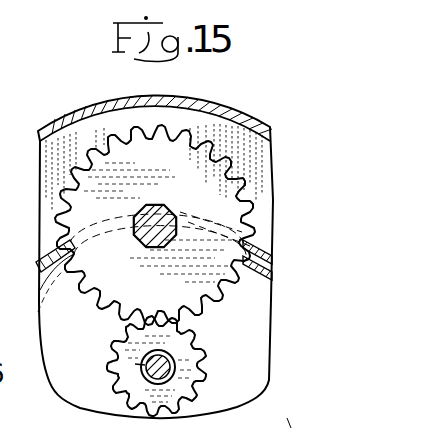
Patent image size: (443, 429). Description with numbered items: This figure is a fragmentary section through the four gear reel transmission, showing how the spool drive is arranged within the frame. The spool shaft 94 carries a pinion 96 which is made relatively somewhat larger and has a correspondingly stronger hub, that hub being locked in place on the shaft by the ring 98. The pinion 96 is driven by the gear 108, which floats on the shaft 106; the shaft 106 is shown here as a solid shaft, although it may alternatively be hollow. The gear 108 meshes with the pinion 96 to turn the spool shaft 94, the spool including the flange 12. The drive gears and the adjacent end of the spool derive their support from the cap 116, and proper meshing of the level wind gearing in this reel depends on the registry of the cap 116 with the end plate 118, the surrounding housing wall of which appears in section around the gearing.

The flange 12 is at (75, 312).
The spool shaft 94 is at (142, 368).
The pinion 96 is at (183, 350).
The ring 98 is at (176, 368).
The shaft 106 is at (167, 214).
The gear 108 is at (100, 163).
The cap 116 is at (260, 124).
The end plate 118 is at (82, 132).